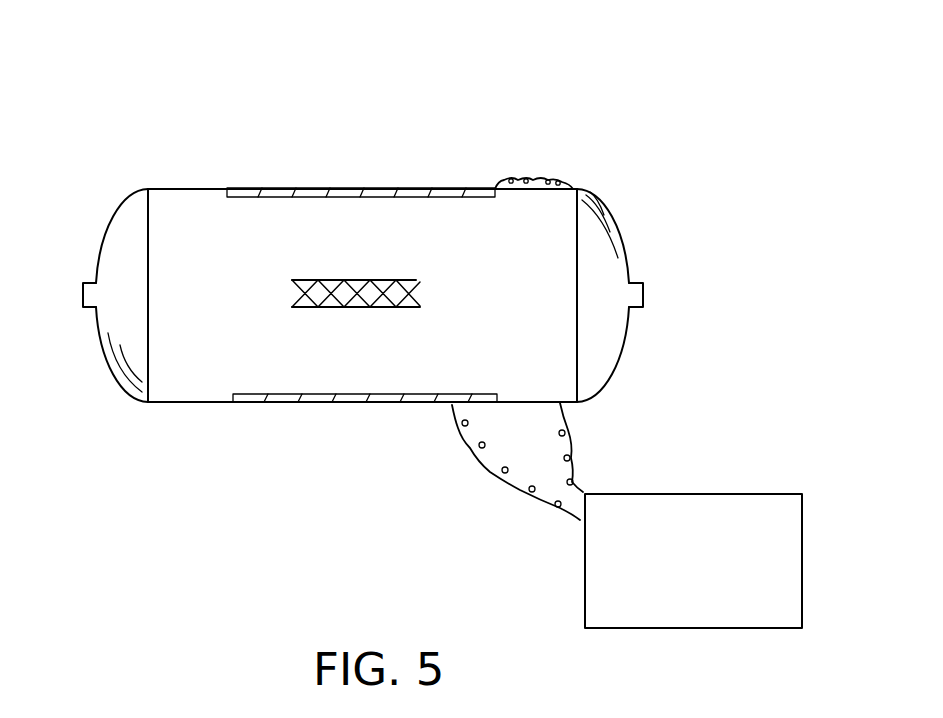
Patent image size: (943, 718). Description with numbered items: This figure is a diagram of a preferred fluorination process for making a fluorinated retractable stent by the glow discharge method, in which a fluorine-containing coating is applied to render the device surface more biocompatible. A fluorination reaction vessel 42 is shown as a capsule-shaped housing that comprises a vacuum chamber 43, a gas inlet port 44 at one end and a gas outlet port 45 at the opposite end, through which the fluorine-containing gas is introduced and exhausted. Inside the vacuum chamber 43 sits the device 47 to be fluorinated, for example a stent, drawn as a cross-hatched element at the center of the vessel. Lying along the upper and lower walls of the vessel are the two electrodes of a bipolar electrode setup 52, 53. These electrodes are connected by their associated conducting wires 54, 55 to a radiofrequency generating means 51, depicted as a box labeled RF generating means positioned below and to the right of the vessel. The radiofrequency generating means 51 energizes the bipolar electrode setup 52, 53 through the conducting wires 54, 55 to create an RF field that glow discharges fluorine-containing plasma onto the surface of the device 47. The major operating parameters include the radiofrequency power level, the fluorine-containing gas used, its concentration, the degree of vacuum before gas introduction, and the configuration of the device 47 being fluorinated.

The fluorination reaction vessel 42 is at (195, 186).
The vacuum chamber 43 is at (530, 200).
The gas inlet port 44 is at (652, 272).
The gas outlet port 45 is at (73, 270).
The device 47 is at (402, 270).
The radiofrequency generating means 51 is at (788, 512).
The bipolar electrode 52 is at (340, 405).
The bipolar electrode 53 is at (358, 187).
The conducting wire 54 is at (470, 447).
The conducting wire 55 is at (580, 440).